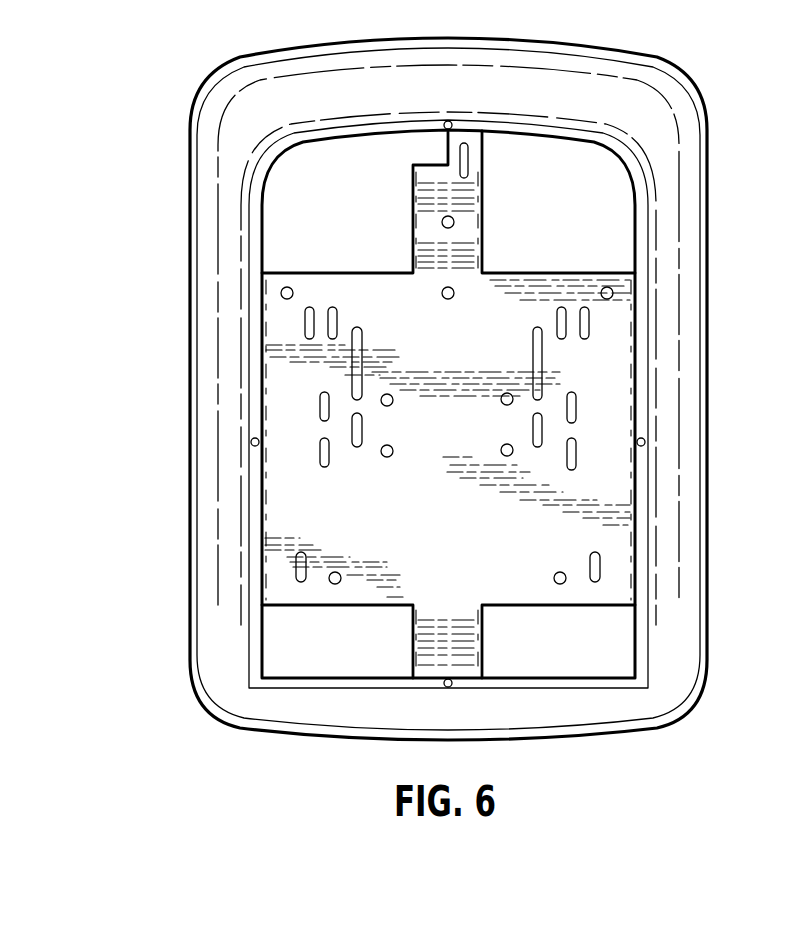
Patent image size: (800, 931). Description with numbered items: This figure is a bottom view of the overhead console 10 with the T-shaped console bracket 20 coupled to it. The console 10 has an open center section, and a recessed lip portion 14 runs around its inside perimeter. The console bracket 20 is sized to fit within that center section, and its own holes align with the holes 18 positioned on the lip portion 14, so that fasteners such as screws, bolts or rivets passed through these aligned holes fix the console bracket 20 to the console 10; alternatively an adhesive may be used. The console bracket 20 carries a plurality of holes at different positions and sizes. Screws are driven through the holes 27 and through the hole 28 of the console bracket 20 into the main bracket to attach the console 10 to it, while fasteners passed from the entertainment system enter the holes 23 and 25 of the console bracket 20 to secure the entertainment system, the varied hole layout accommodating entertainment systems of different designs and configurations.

The overhead console 10 is at (710, 610).
The recessed lip portion 14 is at (257, 505).
The holes 18 is at (451, 122).
The console bracket 20 is at (610, 363).
The holes 23 is at (350, 390).
The holes 25 is at (350, 433).
The holes 27 is at (373, 389).
The hole 28 is at (443, 217).